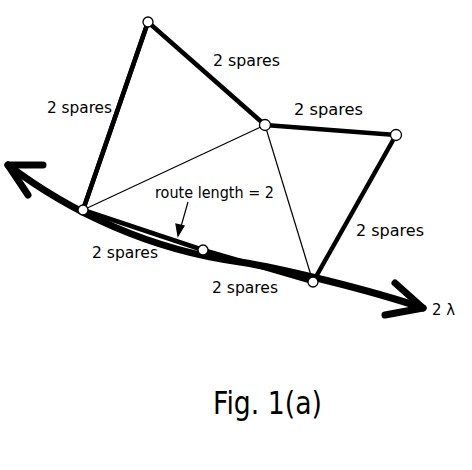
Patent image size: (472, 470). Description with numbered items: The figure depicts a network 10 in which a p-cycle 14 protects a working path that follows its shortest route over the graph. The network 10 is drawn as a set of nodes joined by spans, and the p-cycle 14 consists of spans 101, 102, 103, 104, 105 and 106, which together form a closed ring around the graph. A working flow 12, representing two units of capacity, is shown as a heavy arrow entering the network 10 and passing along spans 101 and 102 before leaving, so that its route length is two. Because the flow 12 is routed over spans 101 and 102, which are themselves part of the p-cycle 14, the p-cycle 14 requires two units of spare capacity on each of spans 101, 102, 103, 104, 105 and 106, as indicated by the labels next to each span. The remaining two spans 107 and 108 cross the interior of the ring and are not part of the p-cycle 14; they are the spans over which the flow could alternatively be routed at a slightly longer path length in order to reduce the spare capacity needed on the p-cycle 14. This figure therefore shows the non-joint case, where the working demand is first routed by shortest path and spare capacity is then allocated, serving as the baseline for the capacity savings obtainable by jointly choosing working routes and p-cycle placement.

The network 10 is at (93, 295).
The flow 12 is at (215, 240).
The p-cycle 14 is at (124, 63).
The span 101 is at (143, 230).
The span 102 is at (258, 260).
The span 103 is at (104, 116).
The span 104 is at (206, 73).
The span 105 is at (330, 139).
The span 106 is at (361, 208).
The span 107 is at (174, 167).
The span 108 is at (291, 203).